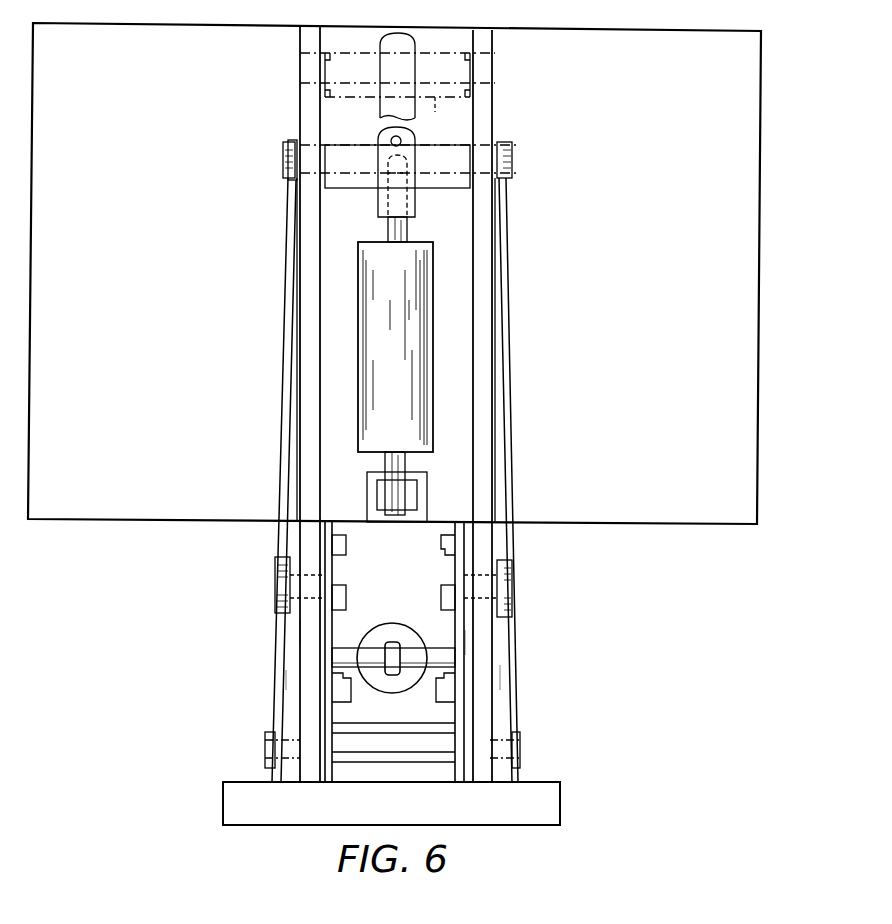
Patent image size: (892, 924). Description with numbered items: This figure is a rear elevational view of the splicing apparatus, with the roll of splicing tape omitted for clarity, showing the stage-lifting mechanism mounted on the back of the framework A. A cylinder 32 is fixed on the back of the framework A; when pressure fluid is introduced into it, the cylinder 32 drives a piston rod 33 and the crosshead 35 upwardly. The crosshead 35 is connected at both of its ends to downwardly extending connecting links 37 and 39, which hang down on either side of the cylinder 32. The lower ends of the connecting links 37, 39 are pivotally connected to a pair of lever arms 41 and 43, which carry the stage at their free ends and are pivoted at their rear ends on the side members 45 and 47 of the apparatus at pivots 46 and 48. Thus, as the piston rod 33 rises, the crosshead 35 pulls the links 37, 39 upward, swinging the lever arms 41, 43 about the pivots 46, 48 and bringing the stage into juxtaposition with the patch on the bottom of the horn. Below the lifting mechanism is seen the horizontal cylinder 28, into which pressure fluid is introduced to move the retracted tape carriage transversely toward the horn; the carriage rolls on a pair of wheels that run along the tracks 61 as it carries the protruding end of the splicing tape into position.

The framework A is at (768, 103).
The horizontal cylinder 28 is at (399, 626).
The cylinder 32 is at (433, 332).
The piston rod 33 is at (410, 229).
The crosshead 35 is at (441, 150).
The connecting link 37 is at (508, 290).
The connecting link 39 is at (290, 286).
The lever arm 41 is at (286, 680).
The lever arm 43 is at (498, 678).
The side member 45 is at (303, 631).
The pivot 46 is at (288, 571).
The side member 47 is at (480, 643).
The pivot 48 is at (500, 564).
The tracks 61 is at (347, 590).